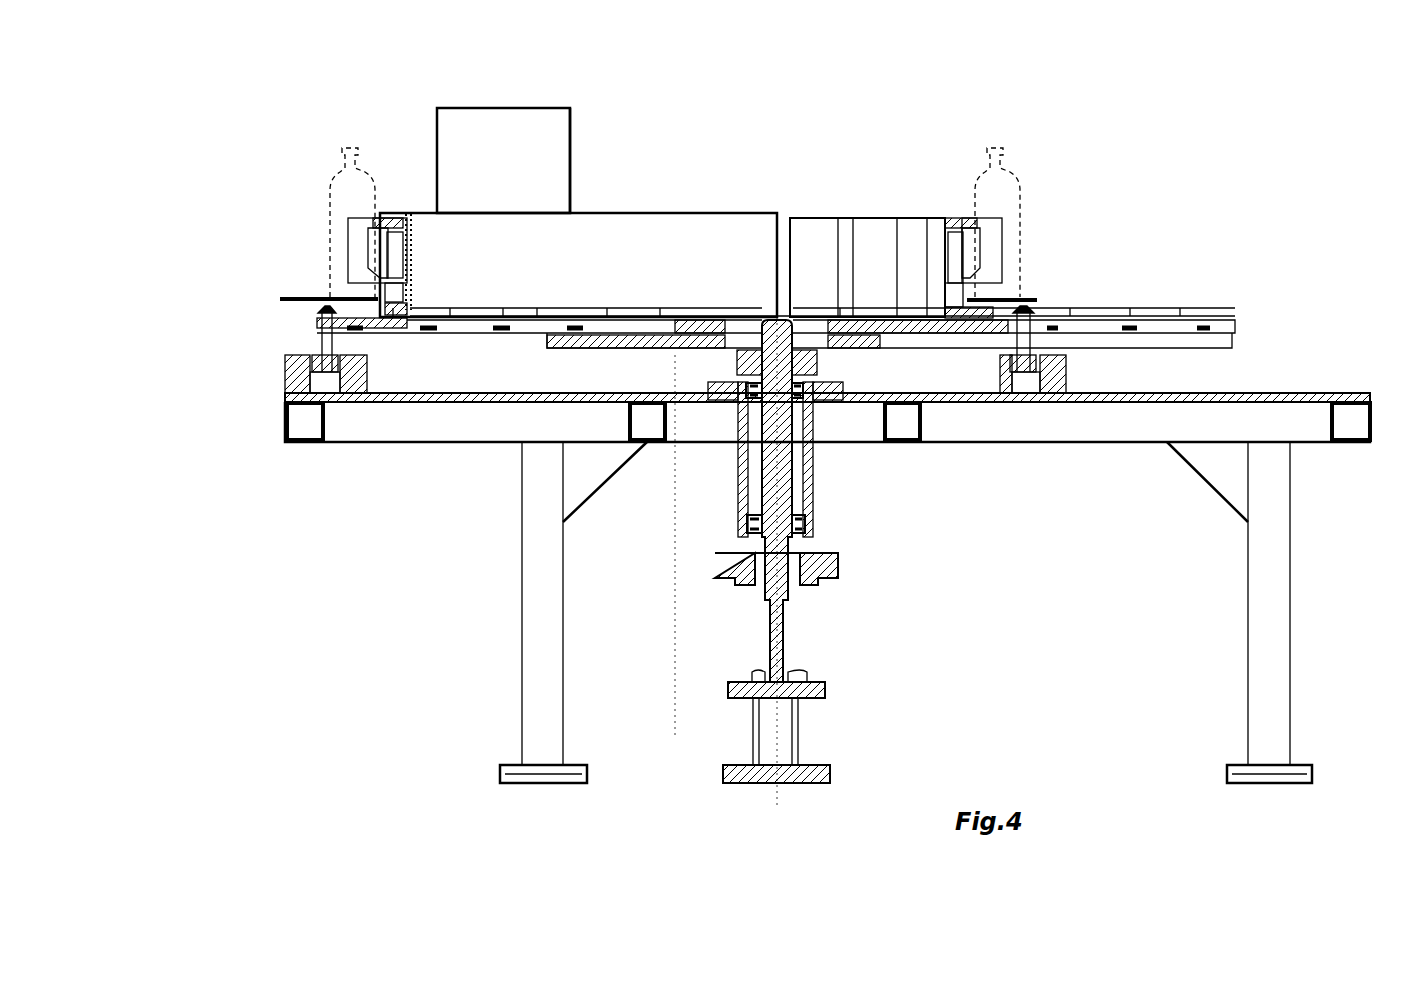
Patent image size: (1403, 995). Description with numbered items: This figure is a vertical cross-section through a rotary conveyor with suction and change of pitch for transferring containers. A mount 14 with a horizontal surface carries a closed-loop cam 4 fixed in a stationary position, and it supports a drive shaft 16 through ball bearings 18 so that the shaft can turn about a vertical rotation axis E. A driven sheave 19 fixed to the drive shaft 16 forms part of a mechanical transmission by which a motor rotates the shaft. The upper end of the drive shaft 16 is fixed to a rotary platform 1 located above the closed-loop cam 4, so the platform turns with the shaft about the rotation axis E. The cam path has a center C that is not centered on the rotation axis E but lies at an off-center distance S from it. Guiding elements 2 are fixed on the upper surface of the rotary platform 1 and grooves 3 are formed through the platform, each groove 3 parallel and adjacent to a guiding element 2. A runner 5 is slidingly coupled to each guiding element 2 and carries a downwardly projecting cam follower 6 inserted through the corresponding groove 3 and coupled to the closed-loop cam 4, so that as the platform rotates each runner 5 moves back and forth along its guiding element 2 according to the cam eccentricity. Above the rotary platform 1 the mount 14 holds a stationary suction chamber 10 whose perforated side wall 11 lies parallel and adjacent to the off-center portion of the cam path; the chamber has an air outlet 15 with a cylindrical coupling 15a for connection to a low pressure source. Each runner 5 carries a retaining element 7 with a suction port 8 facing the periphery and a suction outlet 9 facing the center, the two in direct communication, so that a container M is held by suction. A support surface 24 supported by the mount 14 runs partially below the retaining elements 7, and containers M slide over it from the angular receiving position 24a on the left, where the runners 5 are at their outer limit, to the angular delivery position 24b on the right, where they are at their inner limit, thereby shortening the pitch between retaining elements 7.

The rotary platform 1 is at (910, 345).
The guiding elements 2 is at (445, 328).
The grooves 3 is at (483, 343).
The closed-loop cam 4 is at (1053, 390).
The runner 5 is at (393, 335).
The cam follower 6 is at (312, 365).
The retaining element 7 is at (350, 232).
The suction port 8 is at (368, 255).
The suction outlet 9 is at (415, 272).
The suction chamber 10 is at (697, 228).
The perforated side wall 11 is at (417, 244).
The mount 14 is at (1308, 393).
The air outlet 15 is at (488, 110).
The cylindrical coupling 15a is at (572, 130).
The drive shaft 16 is at (788, 463).
The ball bearings 18 is at (810, 520).
The driven sheave 19 is at (836, 568).
The support surface 24 is at (292, 308).
The angular receiving position 24a is at (300, 238).
The angular delivery position 24b is at (1052, 238).
The container M is at (335, 182).
The center C is at (675, 497).
The off-center distance S is at (777, 720).
The rotation axis E is at (788, 743).